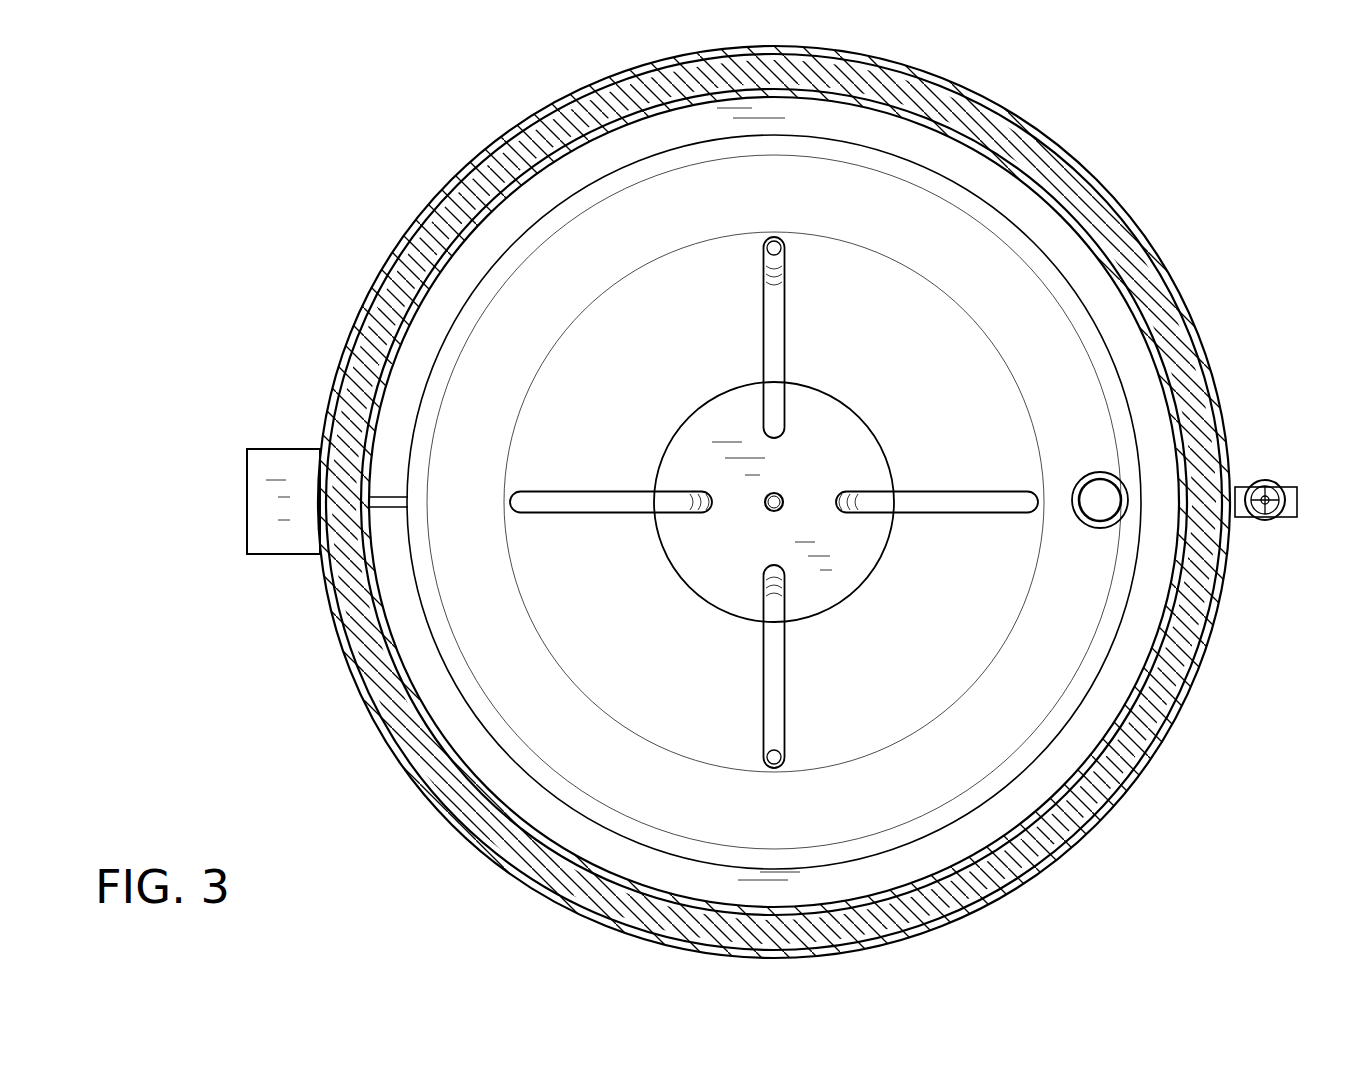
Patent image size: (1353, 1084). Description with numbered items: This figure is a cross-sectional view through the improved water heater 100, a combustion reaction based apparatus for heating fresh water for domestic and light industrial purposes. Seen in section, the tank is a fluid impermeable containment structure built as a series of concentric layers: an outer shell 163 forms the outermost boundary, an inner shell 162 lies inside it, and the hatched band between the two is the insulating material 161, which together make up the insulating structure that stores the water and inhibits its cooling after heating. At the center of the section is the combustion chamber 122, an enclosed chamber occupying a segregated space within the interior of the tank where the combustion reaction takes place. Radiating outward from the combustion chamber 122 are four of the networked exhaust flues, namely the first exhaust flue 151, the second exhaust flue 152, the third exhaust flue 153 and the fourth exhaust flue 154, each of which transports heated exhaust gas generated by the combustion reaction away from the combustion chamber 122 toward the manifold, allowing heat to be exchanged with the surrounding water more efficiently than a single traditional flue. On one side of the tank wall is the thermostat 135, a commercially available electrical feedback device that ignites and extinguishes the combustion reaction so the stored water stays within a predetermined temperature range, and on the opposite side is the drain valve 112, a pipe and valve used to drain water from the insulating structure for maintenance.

The improved water heater 100 is at (196, 220).
The drain valve 112 is at (1292, 484).
The combustion chamber 122 is at (852, 550).
The thermostat 135 is at (272, 554).
The first exhaust flue 151 is at (945, 503).
The second exhaust flue 152 is at (775, 675).
The third exhaust flue 153 is at (595, 505).
The fourth exhaust flue 154 is at (775, 344).
The insulating material 161 is at (483, 823).
The inner shell 162 is at (510, 808).
The outer shell 163 is at (384, 737).